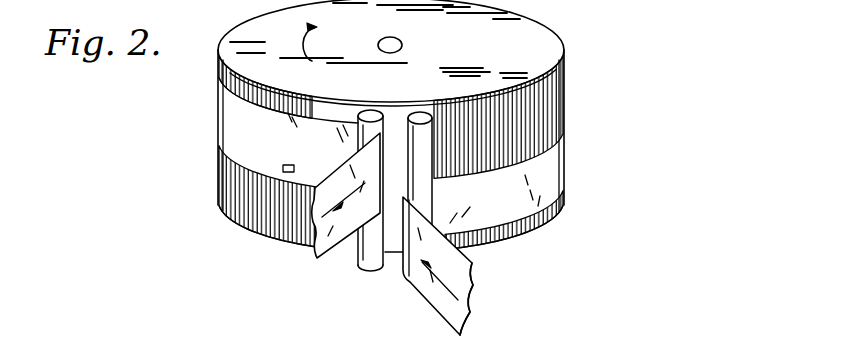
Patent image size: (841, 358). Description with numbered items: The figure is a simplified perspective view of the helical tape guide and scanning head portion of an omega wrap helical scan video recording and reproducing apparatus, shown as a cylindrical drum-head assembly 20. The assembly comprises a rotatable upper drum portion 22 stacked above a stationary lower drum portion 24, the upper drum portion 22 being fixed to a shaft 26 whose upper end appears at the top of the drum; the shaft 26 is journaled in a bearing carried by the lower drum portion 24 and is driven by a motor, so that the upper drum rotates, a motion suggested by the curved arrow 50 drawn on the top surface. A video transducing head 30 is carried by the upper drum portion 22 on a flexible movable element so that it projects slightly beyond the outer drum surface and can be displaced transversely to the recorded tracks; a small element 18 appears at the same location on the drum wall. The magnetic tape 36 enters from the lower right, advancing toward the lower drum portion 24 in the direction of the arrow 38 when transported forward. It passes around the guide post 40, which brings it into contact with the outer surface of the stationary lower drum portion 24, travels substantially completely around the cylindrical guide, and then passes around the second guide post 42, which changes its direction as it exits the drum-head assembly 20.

The drum-head assembly 20 is at (586, 61).
The rotatable upper drum portion 22 is at (222, 57).
The stationary lower drum portion 24 is at (236, 221).
The shaft 26 is at (402, 42).
The direction of rotation 50 is at (321, 42).
The second guide post 42 is at (371, 111).
The guide post 40 is at (426, 112).
The video transducing head 30 is at (294, 170).
The fastener 18 is at (282, 168).
The arrow 38 is at (436, 285).
The magnetic tape 36 is at (460, 334).